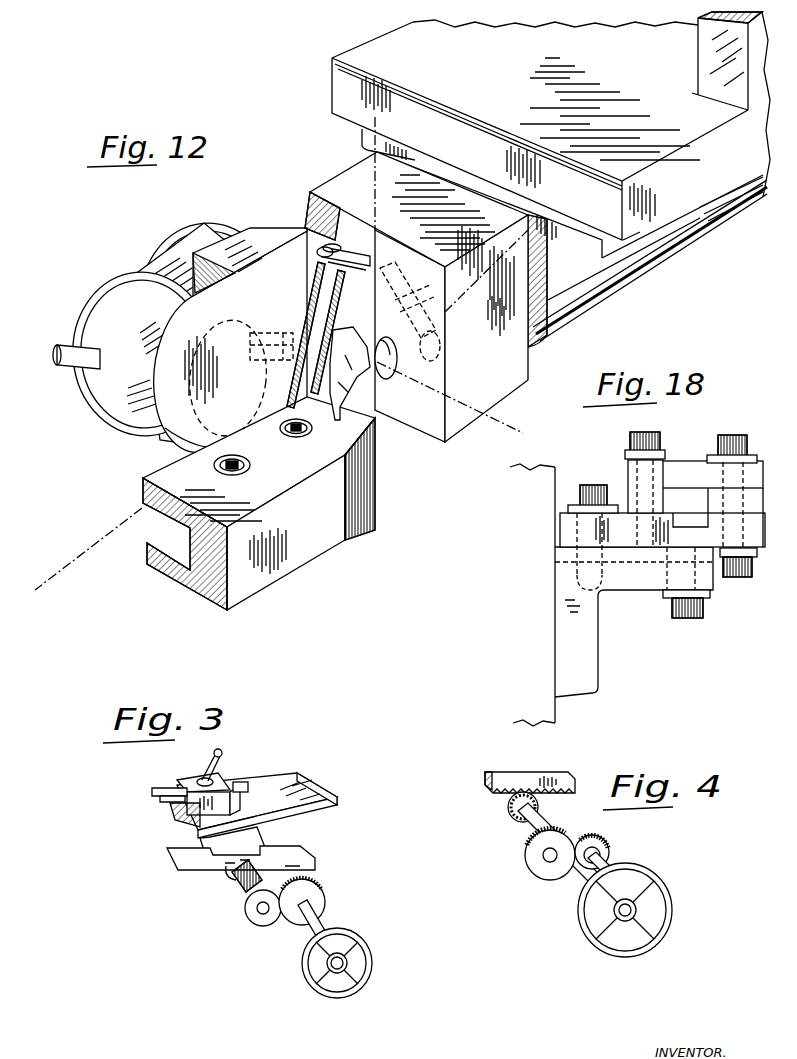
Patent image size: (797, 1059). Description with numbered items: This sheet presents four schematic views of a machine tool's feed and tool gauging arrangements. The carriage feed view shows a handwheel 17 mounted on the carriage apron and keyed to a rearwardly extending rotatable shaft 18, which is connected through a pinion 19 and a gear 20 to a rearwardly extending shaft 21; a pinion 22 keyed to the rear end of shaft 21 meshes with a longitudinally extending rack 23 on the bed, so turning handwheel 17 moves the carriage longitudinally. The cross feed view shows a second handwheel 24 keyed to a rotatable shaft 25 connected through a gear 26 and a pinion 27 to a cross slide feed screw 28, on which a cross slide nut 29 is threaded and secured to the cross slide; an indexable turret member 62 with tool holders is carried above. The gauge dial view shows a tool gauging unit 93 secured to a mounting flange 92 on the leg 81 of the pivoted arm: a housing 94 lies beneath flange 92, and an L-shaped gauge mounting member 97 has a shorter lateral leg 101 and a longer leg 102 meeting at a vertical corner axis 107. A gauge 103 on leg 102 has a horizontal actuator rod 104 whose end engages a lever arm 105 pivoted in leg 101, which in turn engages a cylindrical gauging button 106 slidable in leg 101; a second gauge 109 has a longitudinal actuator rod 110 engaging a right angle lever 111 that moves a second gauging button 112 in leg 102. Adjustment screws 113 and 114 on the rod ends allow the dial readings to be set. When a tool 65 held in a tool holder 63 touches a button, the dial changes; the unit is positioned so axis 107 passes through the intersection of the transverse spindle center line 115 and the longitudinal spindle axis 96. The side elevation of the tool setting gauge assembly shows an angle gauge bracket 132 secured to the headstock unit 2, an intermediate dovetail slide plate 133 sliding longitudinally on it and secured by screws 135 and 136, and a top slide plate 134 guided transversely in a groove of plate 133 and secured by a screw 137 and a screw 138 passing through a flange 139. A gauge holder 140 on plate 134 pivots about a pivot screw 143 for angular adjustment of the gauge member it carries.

In FIG. 12, the mounting plate or flange 92 is at (358, 60).
In FIG. 12, the leg 81 is at (703, 56).
In FIG. 12, the shorter leg 101 is at (467, 198).
In FIG. 12, the housing 94 is at (580, 308).
In FIG. 12, the gauge 103 is at (192, 222).
In FIG. 12, the tool gauging unit 93 is at (122, 250).
In FIG. 12, the second gauge 109 is at (100, 300).
In FIG. 12, the gauge mounting member 97 is at (248, 228).
In FIG. 12, the longer leg 102 is at (177, 430).
In FIG. 12, the longitudinal spindle axis 96 is at (110, 528).
In FIG. 12, the tool holder 63 is at (323, 543).
In FIG. 12, the tool 65 is at (350, 407).
In FIG. 12, the actuator rod 110 is at (260, 322).
In FIG. 12, the adjustment screw 114 is at (283, 362).
In FIG. 12, the right angle lever 111 is at (295, 380).
In FIG. 12, the cylindrical gauging button 112 is at (340, 305).
In FIG. 12, the horizontal actuator rod 104 is at (323, 252).
In FIG. 12, the adjustment screw 113 is at (331, 246).
In FIG. 12, the vertical corner axis 107 is at (382, 174).
In FIG. 12, the lever arm 105 is at (382, 277).
In FIG. 12, the cylindrical gauging button 106 is at (387, 374).
In FIG. 12, the transverse spindle center line 115 is at (503, 420).
In FIG. 18, the headstock unit 2 is at (555, 715).
In FIG. 18, the angle gauge bracket 132 is at (598, 660).
In FIG. 18, the intermediate dovetail slide plate 133 is at (565, 533).
In FIG. 18, the gauge holder 140 is at (683, 457).
In FIG. 18, the top slide plate 134 is at (693, 472).
In FIG. 18, the flange 139 is at (628, 465).
In FIG. 18, the screw 138 is at (657, 432).
In FIG. 18, the screw 136 is at (590, 485).
In FIG. 18, the pivot screw 143 is at (740, 435).
In FIG. 18, the screw 137 is at (740, 578).
In FIG. 18, the screw 135 is at (672, 612).
In FIG. 3, the indexable turret member 62 is at (228, 775).
In FIG. 3, the cross slide nut 29 is at (228, 882).
In FIG. 3, the cross slide feed screw 28 is at (244, 890).
In FIG. 3, the pinion 27 is at (255, 920).
In FIG. 3, the gear 26 is at (325, 898).
In FIG. 3, the rotatable shaft 25 is at (316, 928).
In FIG. 3, the second handwheel 24 is at (303, 979).
In FIG. 4, the rack 23 is at (492, 794).
In FIG. 4, the pinion 22 is at (512, 818).
In FIG. 4, the shaft 21 is at (538, 816).
In FIG. 4, the gear 20 is at (536, 862).
In FIG. 4, the pinion 19 is at (606, 846).
In FIG. 4, the rotatable shaft 18 is at (596, 870).
In FIG. 4, the handwheel 17 is at (590, 938).